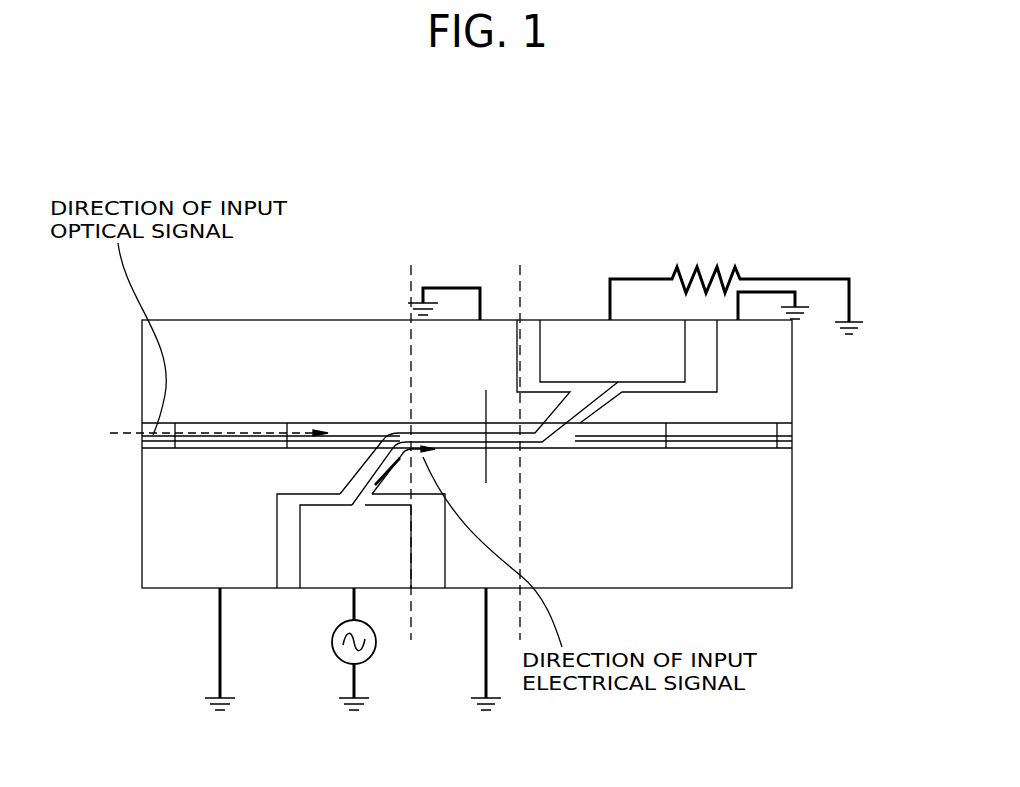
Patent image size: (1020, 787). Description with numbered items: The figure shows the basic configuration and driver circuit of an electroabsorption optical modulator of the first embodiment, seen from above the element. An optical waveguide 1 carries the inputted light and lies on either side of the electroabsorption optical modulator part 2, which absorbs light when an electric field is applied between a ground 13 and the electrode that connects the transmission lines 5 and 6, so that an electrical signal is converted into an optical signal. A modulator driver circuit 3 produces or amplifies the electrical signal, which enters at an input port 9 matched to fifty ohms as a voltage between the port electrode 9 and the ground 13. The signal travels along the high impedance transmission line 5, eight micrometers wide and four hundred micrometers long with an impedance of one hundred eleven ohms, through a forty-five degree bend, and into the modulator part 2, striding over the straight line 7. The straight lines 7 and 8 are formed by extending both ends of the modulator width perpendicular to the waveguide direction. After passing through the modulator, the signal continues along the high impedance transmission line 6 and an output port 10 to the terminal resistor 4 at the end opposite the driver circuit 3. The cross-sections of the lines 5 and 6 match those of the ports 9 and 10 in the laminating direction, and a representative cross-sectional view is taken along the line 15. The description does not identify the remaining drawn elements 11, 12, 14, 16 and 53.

The optical waveguide 1 is at (350, 437).
The optical modulator part 2 is at (441, 440).
The modulator driver circuit 3 is at (363, 665).
The terminal resistor 4 is at (705, 267).
The transmission line 5 is at (337, 490).
The transmission line 6 is at (567, 417).
The straight line 7 is at (413, 439).
The straight line 8 is at (521, 439).
The input port 9 is at (330, 577).
The output port 10 is at (571, 340).
The ground lead 11 is at (488, 681).
The ground 12 is at (502, 707).
The ground 13 is at (777, 388).
The center line 14 is at (487, 398).
The line 15 is at (345, 468).
The waveguide end portion 16 is at (185, 440).
The substrate 53 is at (213, 330).